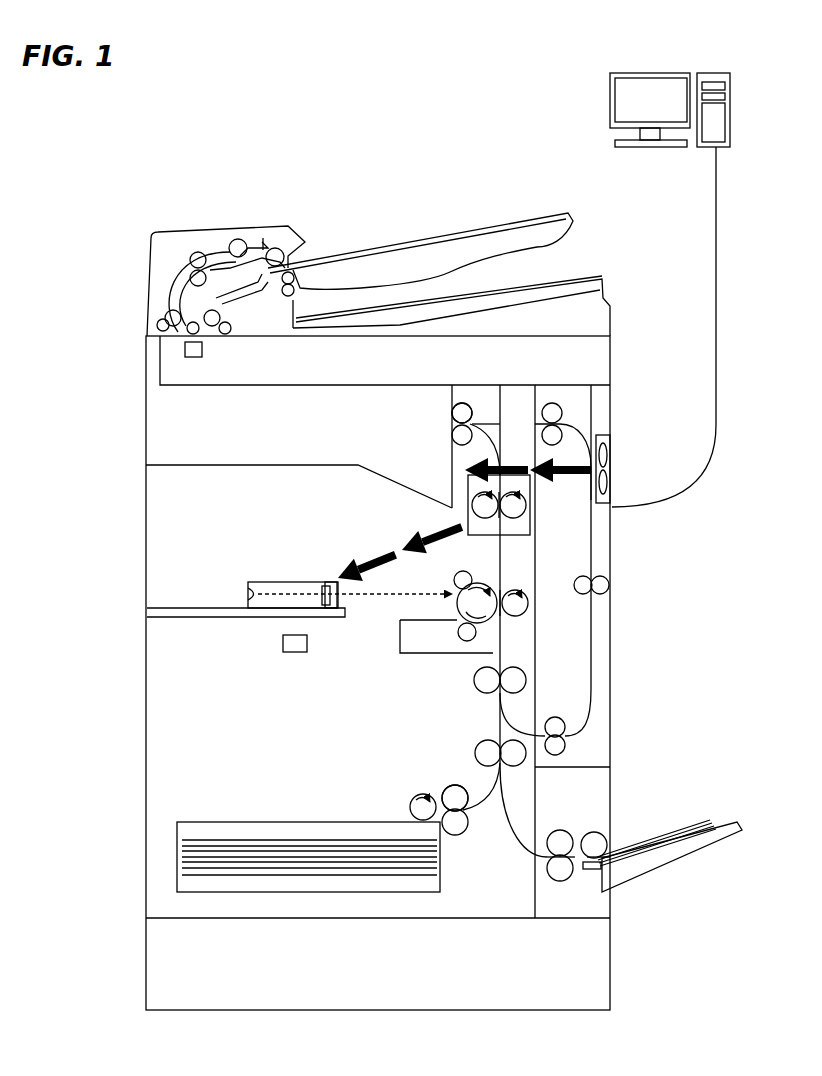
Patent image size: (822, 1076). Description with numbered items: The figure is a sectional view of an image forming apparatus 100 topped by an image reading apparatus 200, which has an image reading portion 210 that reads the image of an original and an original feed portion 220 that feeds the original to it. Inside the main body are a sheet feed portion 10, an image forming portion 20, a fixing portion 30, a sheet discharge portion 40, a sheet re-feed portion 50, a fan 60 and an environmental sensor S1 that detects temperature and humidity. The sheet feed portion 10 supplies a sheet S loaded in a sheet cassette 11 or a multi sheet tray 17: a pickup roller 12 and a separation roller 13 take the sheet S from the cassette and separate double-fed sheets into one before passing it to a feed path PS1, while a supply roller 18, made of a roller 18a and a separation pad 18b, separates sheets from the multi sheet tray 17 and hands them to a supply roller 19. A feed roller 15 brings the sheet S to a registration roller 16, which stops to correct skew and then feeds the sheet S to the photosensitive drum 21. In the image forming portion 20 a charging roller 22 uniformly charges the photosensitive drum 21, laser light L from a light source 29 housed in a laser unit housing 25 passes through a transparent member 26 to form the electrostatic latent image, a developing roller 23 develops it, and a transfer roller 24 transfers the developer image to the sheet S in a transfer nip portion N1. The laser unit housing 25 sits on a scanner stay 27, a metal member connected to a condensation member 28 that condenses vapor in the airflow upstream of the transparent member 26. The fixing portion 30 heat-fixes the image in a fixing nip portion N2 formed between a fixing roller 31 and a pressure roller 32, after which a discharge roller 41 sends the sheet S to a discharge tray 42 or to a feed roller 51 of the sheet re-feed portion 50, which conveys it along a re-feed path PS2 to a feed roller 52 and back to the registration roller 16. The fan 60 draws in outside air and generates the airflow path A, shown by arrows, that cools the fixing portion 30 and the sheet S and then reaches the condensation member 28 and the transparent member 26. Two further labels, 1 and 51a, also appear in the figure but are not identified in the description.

The host computer 1 is at (590, 88).
The image forming apparatus 100 is at (125, 553).
The image reading apparatus 200 is at (147, 193).
The image reading portion 210 is at (126, 362).
The original feed portion 220 is at (137, 289).
The sheet feed portion 10 is at (458, 768).
The sheet cassette 11 is at (235, 820).
The pickup roller 12 is at (411, 805).
The separation roller 13 is at (453, 834).
The feed roller 15 is at (476, 750).
The registration roller 16 is at (476, 688).
The multi sheet tray 17 is at (724, 822).
The supply roller 18 is at (686, 894).
The roller 18a is at (606, 847).
The separation pad 18b is at (601, 866).
The supply roller 19 is at (560, 832).
The image forming portion 20 is at (230, 505).
The photosensitive drum 21 is at (482, 584).
The charging roller 22 is at (455, 578).
The developing roller 23 is at (462, 638).
The transfer roller 24 is at (528, 610).
The laser unit housing 25 is at (262, 588).
The transparent member 26 is at (322, 590).
The scanner stay 27 is at (203, 620).
The condensation member 28 is at (332, 582).
The light source 29 is at (248, 594).
The fixing portion 30 is at (465, 485).
The fixing roller 31 is at (468, 498).
The pressure roller 32 is at (524, 510).
The sheet discharge portion 40 is at (448, 430).
The discharge roller 41 is at (470, 404).
The discharge tray 42 is at (300, 464).
The sheet re-feed portion 50 is at (601, 571).
The feed roller 51 is at (606, 591).
The reverse conveying roller pair 51a is at (555, 404).
The feed roller 52 is at (553, 717).
The fan 60 is at (603, 442).
The airflow path A is at (462, 523).
The laser light L is at (386, 600).
The transfer nip portion N1 is at (501, 616).
The fixing nip portion N2 is at (502, 518).
The feed path PS1 is at (480, 808).
The re-feed path PS2 is at (593, 657).
The sheet S is at (300, 840).
The environmental sensor S1 is at (297, 652).